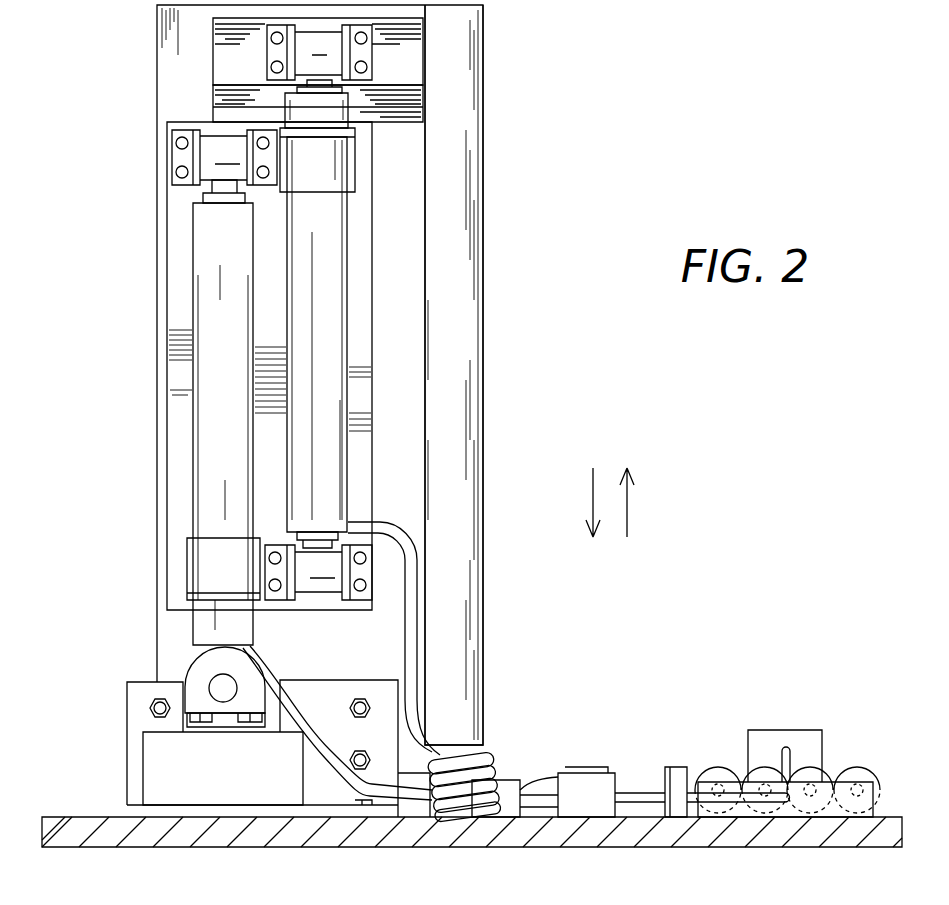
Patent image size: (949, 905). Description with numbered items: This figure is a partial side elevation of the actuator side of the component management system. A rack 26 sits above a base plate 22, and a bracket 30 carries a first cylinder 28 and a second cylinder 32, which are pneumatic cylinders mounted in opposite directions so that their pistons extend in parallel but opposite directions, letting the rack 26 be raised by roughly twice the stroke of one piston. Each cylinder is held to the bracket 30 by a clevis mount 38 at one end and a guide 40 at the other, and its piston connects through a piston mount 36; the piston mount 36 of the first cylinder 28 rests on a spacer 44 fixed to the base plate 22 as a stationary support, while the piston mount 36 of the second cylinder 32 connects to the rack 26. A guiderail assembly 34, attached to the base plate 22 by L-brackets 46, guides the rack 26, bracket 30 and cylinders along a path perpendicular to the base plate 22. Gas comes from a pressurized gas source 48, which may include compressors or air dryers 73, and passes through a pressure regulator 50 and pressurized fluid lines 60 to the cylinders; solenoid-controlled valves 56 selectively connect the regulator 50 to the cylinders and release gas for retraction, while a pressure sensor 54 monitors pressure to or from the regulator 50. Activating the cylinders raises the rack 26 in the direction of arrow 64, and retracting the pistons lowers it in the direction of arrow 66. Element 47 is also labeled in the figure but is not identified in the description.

The base plate 22 is at (105, 817).
The rack 26 is at (171, 77).
The first cylinder 28 is at (240, 373).
The bracket 30 is at (176, 428).
The second cylinder 32 is at (335, 203).
The guiderail assembly 34 is at (430, 302).
The piston mount 36 is at (367, 52).
The clevis mount 38 is at (175, 157).
The guide 40 is at (352, 160).
The spacer 44 is at (212, 778).
The L-bracket 46 is at (392, 762).
The drive assembly 47 is at (696, 659).
The pressurized gas source 48 is at (889, 768).
The pressure regulator 50 is at (610, 773).
The pressure sensor 54 is at (680, 768).
The solenoid-controlled valve 56 is at (510, 780).
The pressurized fluid line 60 is at (452, 765).
The arrow 64 is at (592, 503).
The arrow 66 is at (628, 505).
The compressor or air dryer 73 is at (785, 730).